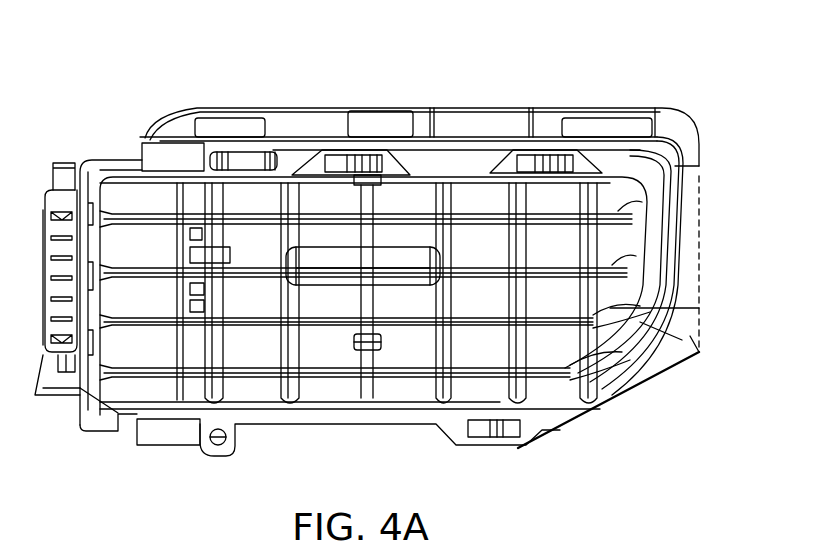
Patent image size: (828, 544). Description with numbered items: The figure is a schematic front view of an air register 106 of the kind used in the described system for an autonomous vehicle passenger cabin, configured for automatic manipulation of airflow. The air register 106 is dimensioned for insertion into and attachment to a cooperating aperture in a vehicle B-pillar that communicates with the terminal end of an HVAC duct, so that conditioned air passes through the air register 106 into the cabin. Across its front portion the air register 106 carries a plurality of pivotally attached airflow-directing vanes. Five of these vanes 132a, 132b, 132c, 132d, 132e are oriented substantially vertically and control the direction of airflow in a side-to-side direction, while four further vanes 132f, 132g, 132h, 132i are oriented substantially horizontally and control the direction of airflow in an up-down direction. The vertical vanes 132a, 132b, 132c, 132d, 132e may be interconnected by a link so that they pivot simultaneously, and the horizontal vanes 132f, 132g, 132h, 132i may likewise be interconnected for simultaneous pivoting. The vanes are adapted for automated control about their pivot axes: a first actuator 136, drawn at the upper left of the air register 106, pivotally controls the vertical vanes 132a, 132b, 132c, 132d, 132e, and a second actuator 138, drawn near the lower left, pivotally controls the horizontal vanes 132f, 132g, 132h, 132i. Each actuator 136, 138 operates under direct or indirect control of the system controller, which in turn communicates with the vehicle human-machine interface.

The air register 106 is at (550, 50).
The first actuator 136 is at (165, 152).
The second actuator 138 is at (172, 435).
The vertically oriented vane 132a is at (217, 192).
The vertically oriented vane 132b is at (293, 192).
The vertically oriented vane 132c is at (443, 192).
The vertically oriented vane 132d is at (521, 190).
The vertically oriented vane 132e is at (595, 192).
The horizontally oriented vane 132f is at (629, 204).
The horizontally oriented vane 132g is at (617, 258).
The horizontally oriented vane 132h is at (612, 305).
The horizontally oriented vane 132i is at (592, 351).